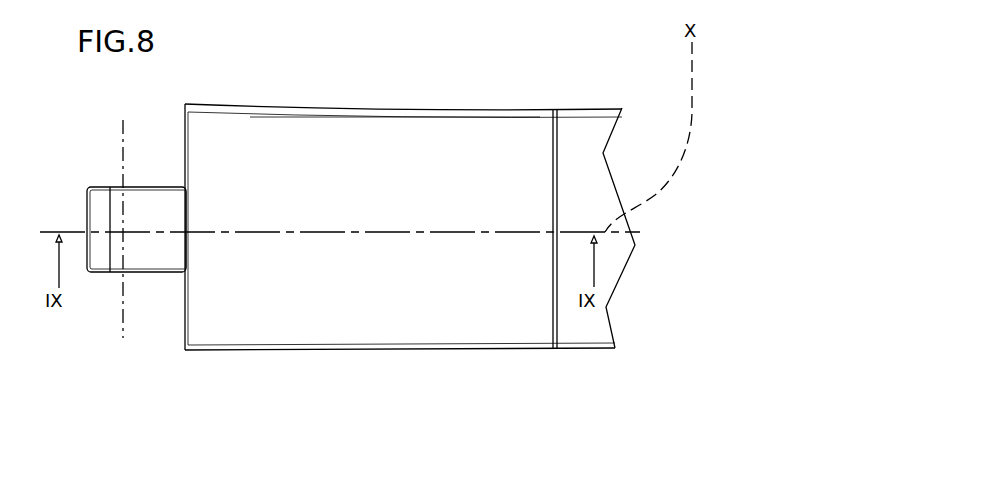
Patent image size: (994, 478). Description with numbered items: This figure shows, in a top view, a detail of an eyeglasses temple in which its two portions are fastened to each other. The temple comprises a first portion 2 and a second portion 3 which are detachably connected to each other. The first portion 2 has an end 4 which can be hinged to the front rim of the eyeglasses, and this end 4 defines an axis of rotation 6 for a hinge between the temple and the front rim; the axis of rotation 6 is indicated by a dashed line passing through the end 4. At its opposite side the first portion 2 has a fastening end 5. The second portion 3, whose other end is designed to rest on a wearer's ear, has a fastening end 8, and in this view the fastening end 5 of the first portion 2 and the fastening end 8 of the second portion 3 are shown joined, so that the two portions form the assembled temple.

The first portion 2 is at (264, 152).
The second portion 3 is at (615, 267).
The end 4 is at (155, 253).
The fastening end 5 is at (535, 149).
The axis of rotation 6 is at (120, 175).
The fastening end 8 is at (570, 186).